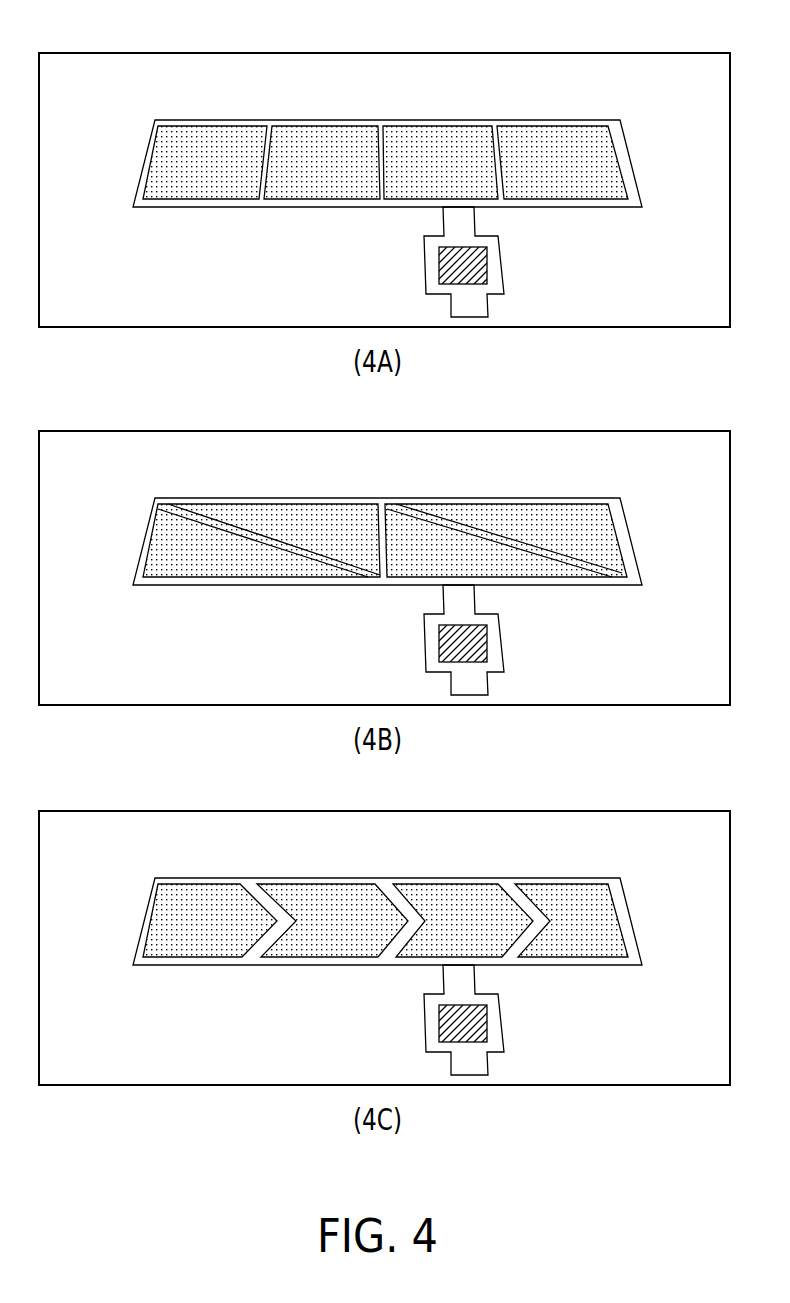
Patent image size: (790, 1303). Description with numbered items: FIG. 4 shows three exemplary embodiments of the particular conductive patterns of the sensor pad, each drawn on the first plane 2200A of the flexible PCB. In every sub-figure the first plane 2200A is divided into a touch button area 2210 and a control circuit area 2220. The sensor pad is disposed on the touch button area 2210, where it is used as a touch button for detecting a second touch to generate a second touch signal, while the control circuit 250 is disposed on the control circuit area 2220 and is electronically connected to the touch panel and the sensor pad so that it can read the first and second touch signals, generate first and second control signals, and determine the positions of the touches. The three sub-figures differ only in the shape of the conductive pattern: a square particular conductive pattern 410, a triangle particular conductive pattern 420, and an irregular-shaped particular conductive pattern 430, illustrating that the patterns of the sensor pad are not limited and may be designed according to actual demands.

The first plane 2200A is at (150, 305).
The touch button area 2210 is at (382, 121).
The control circuit area 2220 is at (434, 257).
The control circuit 250 is at (479, 265).
The particular conductive pattern 410 is at (177, 167).
The particular conductive pattern 420 is at (352, 540).
The particular conductive pattern 430 is at (352, 920).